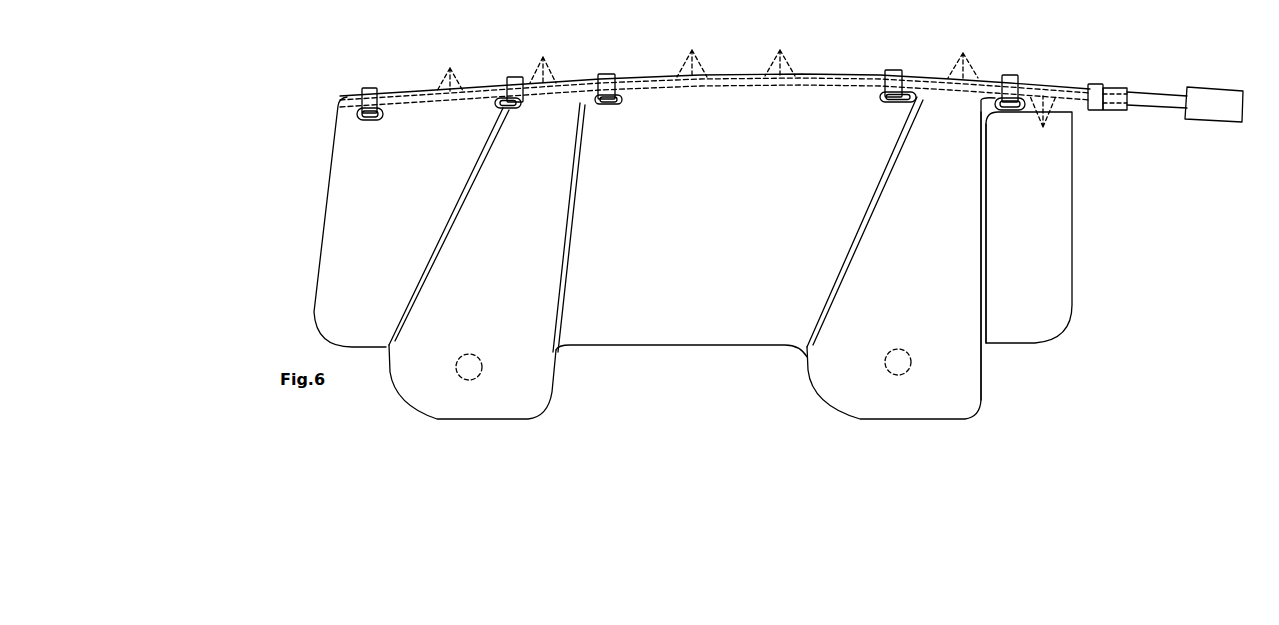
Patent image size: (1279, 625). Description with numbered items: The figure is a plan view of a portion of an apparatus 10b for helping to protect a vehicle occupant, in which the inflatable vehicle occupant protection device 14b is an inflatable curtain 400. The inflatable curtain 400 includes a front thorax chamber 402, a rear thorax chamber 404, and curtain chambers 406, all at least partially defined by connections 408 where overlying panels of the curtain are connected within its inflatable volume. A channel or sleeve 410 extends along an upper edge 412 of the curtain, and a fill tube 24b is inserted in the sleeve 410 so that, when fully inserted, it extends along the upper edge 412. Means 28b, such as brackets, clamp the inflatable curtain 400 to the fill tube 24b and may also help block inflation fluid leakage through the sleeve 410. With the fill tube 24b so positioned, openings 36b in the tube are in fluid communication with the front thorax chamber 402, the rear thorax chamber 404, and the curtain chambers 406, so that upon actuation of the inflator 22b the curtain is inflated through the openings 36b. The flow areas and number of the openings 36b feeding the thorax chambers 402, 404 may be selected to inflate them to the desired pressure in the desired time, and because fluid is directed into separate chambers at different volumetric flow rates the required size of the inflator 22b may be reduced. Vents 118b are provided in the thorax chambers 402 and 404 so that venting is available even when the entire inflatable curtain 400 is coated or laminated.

The apparatus 10b is at (333, 76).
The inflatable vehicle occupant protection device 14b is at (657, 132).
The inflator 22b is at (1215, 115).
The fill tube 24b is at (1163, 100).
The brackets 28b is at (372, 88).
The openings 36b is at (744, 88).
The vents 118b is at (472, 353).
The inflatable curtain 400 is at (728, 132).
The front thorax chamber 402 is at (492, 392).
The rear thorax chamber 404 is at (920, 392).
The curtain chambers 406 is at (350, 198).
The connections 408 is at (574, 200).
The sleeve 410 is at (1086, 90).
The upper edge 412 is at (878, 80).